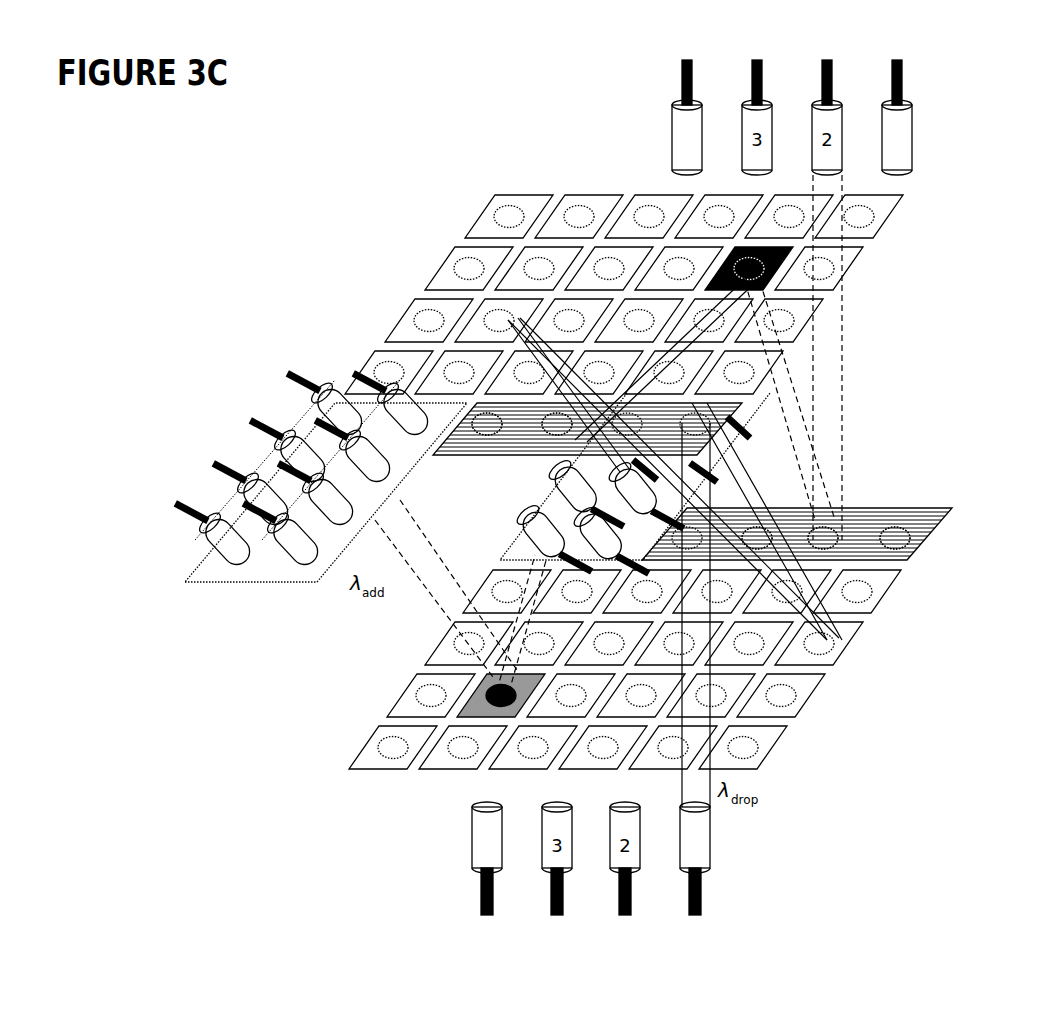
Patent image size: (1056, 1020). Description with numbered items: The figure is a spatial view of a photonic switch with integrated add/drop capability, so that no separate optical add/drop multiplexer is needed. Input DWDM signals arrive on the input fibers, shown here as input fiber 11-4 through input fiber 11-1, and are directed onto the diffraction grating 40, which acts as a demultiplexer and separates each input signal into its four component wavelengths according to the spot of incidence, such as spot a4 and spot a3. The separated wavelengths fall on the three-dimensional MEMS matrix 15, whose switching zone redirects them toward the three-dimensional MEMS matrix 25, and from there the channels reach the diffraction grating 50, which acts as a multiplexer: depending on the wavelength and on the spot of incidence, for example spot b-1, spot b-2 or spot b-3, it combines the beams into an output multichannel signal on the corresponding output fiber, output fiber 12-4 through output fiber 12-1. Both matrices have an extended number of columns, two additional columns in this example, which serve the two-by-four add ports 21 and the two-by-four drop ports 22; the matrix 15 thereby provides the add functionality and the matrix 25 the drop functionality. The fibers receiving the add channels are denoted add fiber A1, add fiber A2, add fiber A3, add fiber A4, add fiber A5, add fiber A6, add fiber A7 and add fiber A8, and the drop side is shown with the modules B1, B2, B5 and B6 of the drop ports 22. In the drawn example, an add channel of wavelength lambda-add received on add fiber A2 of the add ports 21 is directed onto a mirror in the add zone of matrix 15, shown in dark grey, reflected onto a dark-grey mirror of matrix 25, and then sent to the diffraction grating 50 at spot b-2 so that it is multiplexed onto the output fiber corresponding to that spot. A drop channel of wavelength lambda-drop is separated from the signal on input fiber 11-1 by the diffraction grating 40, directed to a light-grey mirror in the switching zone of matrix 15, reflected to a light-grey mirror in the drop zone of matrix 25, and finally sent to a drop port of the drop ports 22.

The 3D-MEMS matrix 25 is at (392, 280).
The 3D-MEMS matrix 15 is at (893, 705).
The diffraction grating 40 is at (447, 458).
The diffraction grating 50 is at (952, 510).
The add ports 21 is at (213, 583).
The drop ports 22 is at (508, 550).
The output fiber 12-4 is at (680, 103).
The output fiber 12-1 is at (913, 123).
The input fiber 11-4 is at (472, 867).
The input fiber 11-1 is at (710, 867).
The spot a4 is at (485, 427).
The spot a3 is at (543, 433).
The spot b-1 is at (910, 537).
The spot b-2 is at (840, 538).
The spot b-3 is at (757, 533).
The add fiber/port A1 is at (283, 528).
The add fiber/port A2 is at (318, 488).
The add fiber/port A3 is at (355, 445).
The add fiber/port A4 is at (393, 398).
The add fiber/port A5 is at (215, 528).
The add fiber/port A6 is at (253, 488).
The add fiber/port A7 is at (290, 445).
The add fiber/port A8 is at (327, 398).
The drop module B1 is at (553, 545).
The drop module B2 is at (585, 500).
The drop module B5 is at (610, 547).
The drop module B6 is at (645, 502).